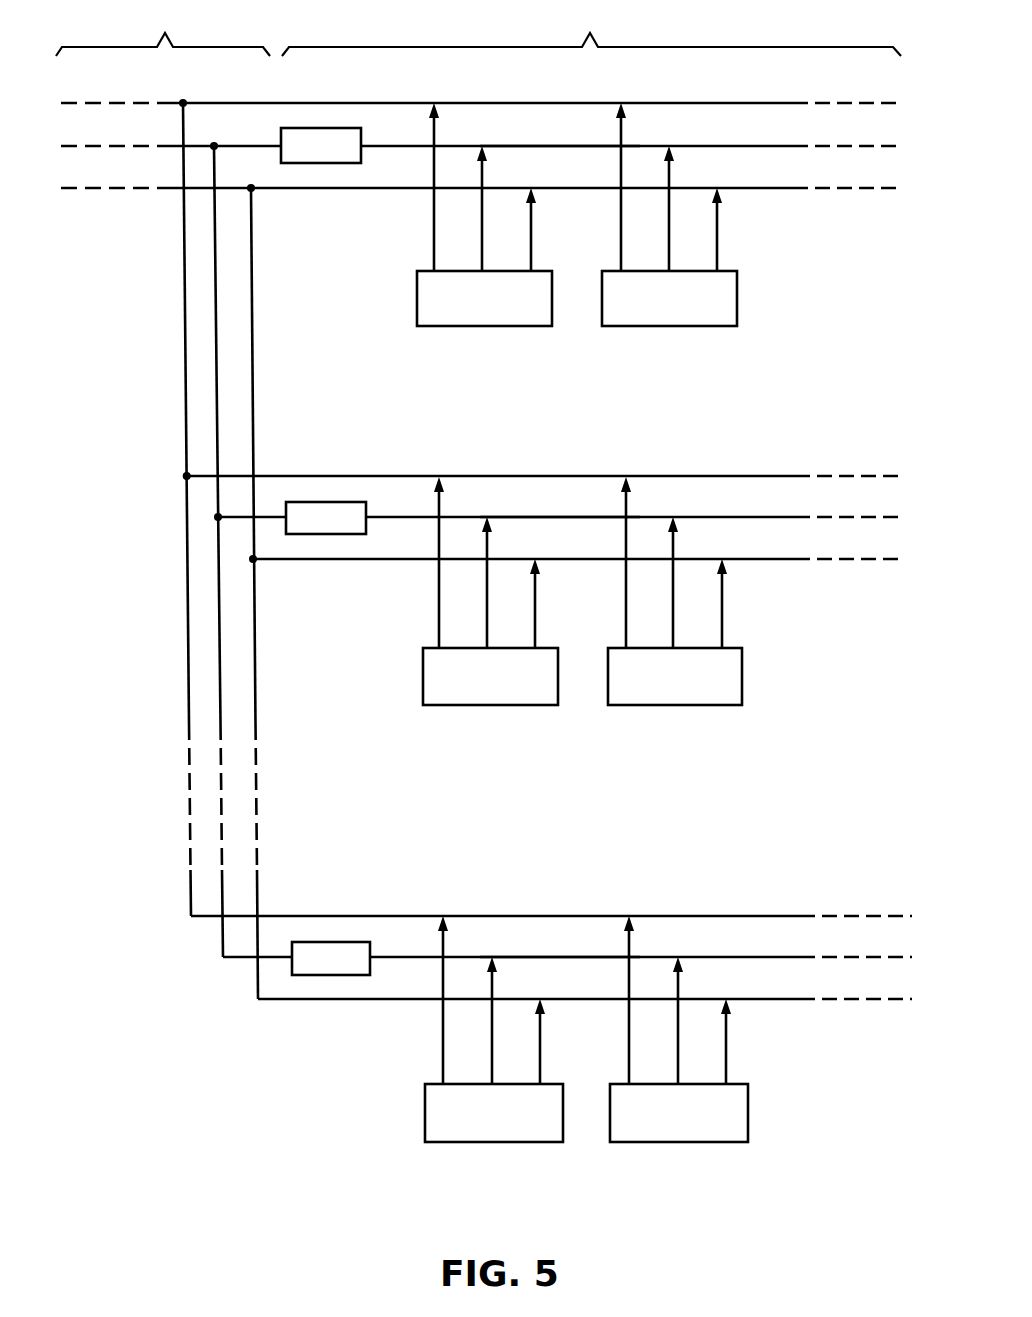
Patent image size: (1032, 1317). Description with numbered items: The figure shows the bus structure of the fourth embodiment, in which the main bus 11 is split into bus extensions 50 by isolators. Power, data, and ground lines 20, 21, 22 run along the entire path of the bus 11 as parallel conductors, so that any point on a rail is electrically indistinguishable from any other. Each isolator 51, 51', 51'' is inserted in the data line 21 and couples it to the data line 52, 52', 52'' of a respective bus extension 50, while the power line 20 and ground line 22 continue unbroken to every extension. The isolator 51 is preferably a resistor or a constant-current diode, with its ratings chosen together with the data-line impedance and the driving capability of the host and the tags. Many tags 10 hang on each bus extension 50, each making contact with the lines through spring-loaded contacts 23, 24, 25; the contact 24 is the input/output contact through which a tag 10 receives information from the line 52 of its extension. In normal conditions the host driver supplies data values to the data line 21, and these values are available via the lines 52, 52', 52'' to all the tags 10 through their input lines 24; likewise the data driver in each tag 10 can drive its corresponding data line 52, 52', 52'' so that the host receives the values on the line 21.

The tag 10 is at (486, 326).
The bus 11 is at (163, 31).
The power line 20 is at (225, 103).
The data line 21 is at (258, 146).
The ground line 22 is at (285, 188).
The spring-loaded contact 23 is at (434, 232).
The input/output contact 24 is at (482, 219).
The spring-loaded contact 25 is at (531, 232).
The bus extension 50 is at (591, 31).
The isolator 51 is at (321, 108).
The isolator 51' is at (326, 475).
The isolator 51'' is at (336, 916).
The line 52 is at (560, 99).
The line 52' is at (560, 467).
The line 52'' is at (560, 905).